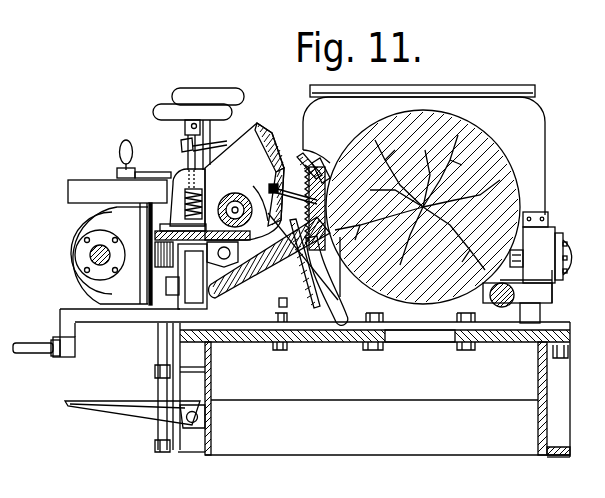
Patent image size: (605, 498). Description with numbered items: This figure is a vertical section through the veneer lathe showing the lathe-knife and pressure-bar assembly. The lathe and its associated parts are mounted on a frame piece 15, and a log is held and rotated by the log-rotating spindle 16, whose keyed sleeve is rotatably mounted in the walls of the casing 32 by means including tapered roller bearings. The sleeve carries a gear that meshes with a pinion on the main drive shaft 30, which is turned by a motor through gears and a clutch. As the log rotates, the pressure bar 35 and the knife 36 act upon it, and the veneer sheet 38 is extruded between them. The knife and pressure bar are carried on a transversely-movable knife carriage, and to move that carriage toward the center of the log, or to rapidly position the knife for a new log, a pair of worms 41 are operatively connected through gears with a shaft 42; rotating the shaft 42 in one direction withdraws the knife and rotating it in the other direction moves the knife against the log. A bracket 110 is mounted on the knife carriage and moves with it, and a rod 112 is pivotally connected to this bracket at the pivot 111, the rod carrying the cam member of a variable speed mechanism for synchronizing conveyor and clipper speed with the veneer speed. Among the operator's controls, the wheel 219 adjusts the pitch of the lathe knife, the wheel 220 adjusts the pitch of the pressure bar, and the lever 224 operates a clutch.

The frame piece 15 is at (211, 382).
The log-rotating spindle 16 is at (598, 214).
The main drive shaft 30 is at (515, 294).
The casing 32 is at (535, 132).
The pressure bar 35 is at (342, 165).
The knife 36 is at (343, 288).
The veneer sheet 38 is at (246, 215).
The worm 41 is at (518, 247).
The shaft 42 is at (98, 257).
The bracket 110 is at (123, 316).
The pivotal connection 111 is at (65, 345).
The rod 112 is at (33, 349).
The wheel 219 is at (193, 94).
The wheel 220 is at (153, 110).
The lever 224 is at (119, 149).